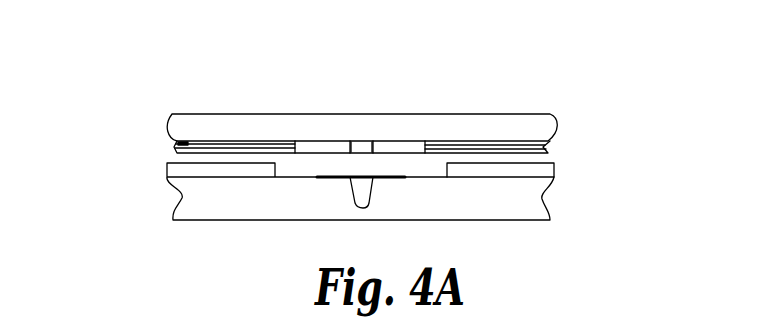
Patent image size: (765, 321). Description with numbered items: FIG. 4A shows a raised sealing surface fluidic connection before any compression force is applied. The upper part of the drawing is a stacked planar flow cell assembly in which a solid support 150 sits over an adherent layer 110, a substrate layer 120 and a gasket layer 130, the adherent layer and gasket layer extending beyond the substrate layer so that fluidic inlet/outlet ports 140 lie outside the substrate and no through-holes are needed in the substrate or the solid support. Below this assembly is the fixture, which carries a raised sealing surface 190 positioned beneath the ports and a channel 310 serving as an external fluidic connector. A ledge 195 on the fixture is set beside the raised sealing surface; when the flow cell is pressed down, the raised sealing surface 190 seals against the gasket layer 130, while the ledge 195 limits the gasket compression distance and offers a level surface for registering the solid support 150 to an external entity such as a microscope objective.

The adherent layer 110 is at (218, 139).
The substrate layer 120 is at (178, 143).
The gasket layer 130 is at (300, 143).
The fluidic inlet/outlet port 140 is at (362, 149).
The solid support 150 is at (463, 123).
The raised sealing surface 190 is at (389, 178).
The ledge 195 is at (550, 171).
The channel 310 is at (213, 200).